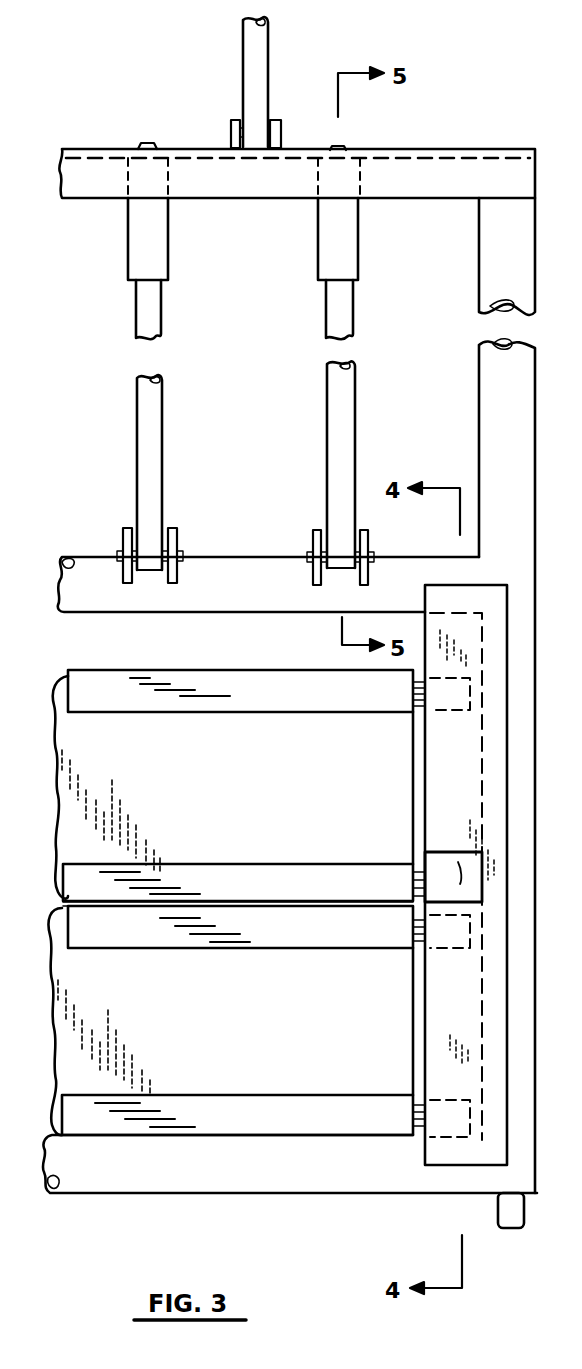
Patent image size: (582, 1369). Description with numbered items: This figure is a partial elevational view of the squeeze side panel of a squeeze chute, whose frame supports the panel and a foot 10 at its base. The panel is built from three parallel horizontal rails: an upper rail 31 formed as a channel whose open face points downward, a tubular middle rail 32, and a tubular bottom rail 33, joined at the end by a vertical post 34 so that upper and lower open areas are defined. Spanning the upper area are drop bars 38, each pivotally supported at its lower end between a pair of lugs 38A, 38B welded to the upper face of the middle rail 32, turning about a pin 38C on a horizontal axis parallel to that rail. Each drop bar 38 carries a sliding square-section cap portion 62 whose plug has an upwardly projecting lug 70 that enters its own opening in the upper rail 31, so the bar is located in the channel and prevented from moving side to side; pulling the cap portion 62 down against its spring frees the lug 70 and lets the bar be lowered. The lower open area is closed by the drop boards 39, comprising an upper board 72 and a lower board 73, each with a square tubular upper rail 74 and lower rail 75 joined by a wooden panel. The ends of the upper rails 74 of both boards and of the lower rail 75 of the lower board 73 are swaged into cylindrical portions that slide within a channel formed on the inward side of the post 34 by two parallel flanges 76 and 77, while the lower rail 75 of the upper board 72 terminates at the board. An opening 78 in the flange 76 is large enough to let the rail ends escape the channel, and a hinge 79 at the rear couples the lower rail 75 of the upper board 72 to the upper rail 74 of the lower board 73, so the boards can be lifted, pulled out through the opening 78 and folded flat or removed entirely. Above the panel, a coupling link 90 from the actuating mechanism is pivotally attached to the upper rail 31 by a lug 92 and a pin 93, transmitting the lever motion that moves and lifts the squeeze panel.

The foot 10 is at (512, 1210).
The upper rail 31 is at (493, 150).
The middle rail 32 is at (92, 552).
The bottom rail 33 is at (175, 1194).
The vertical post 34 is at (520, 382).
The drop bar 38 is at (342, 410).
The lug 38A is at (313, 534).
The lug 38B is at (370, 538).
The pin 38C is at (313, 555).
The drop boards 39 is at (271, 662).
The cap portion 62 is at (345, 250).
The lug 70 is at (147, 143).
The upper board 72 is at (121, 730).
The lower board 73 is at (251, 1076).
The upper rail 74 is at (184, 682).
The lower rail 75 is at (233, 876).
The flange 76 is at (445, 735).
The flange 77 is at (440, 876).
The opening 78 is at (455, 858).
The hinge 79 is at (140, 903).
The coupling link 90 is at (245, 49).
The lug 92 is at (232, 118).
The pin 93 is at (228, 130).